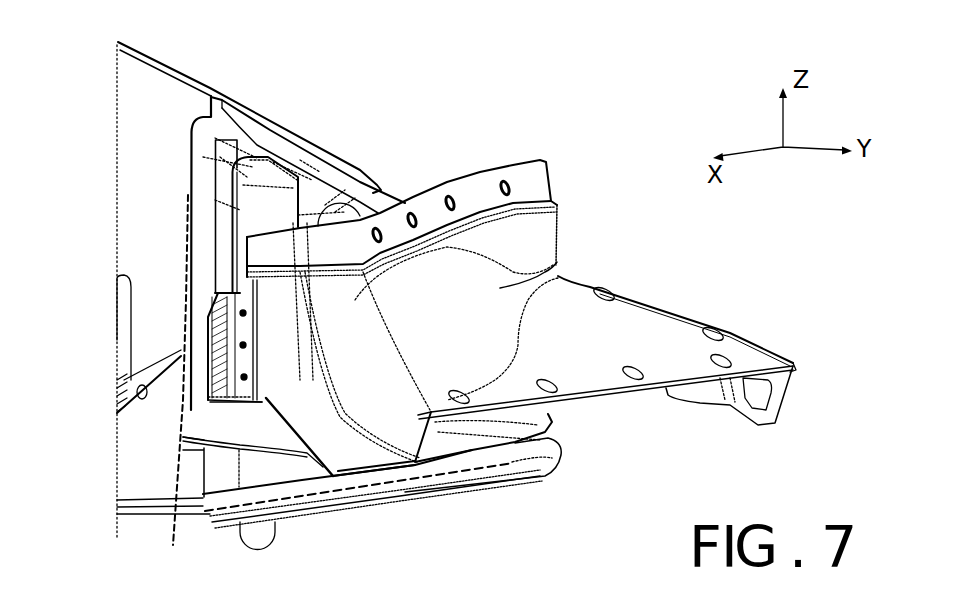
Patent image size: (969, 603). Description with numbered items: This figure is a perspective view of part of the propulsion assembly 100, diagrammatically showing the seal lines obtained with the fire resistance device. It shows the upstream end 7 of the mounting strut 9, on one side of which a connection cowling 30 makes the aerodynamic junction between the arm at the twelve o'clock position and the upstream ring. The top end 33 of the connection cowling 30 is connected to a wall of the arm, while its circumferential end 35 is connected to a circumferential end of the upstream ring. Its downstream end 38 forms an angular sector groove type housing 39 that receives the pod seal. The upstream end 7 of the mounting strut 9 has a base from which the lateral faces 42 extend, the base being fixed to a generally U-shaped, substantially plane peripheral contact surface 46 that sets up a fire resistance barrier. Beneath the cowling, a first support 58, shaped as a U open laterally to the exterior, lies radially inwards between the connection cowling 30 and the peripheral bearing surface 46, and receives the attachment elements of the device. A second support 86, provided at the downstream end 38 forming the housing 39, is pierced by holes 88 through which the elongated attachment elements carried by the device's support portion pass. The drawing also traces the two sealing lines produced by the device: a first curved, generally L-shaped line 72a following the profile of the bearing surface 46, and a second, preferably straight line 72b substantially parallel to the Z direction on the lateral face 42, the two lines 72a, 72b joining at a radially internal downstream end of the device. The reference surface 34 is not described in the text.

The upstream end of the mounting strut 7 is at (268, 120).
The mounting strut 9 is at (225, 74).
The connection cowling 30 is at (622, 322).
The top end of the connection cowling 33 is at (478, 193).
The housing surface 34 is at (500, 288).
The circumferential end of the connection cowling 35 is at (665, 390).
The downstream end of the connection cowling 38 is at (338, 447).
The seal housing 39 is at (285, 414).
The lateral face of the mounting strut 42 is at (150, 178).
The peripheral contact surface 46 is at (528, 475).
The first support of the connection cowling 58 is at (553, 418).
The first curved sealing line 72a is at (442, 472).
The second sealing line 72b is at (185, 322).
The second support 86 is at (245, 355).
The holes 88 is at (246, 345).
The propulsion assembly 100 is at (603, 170).